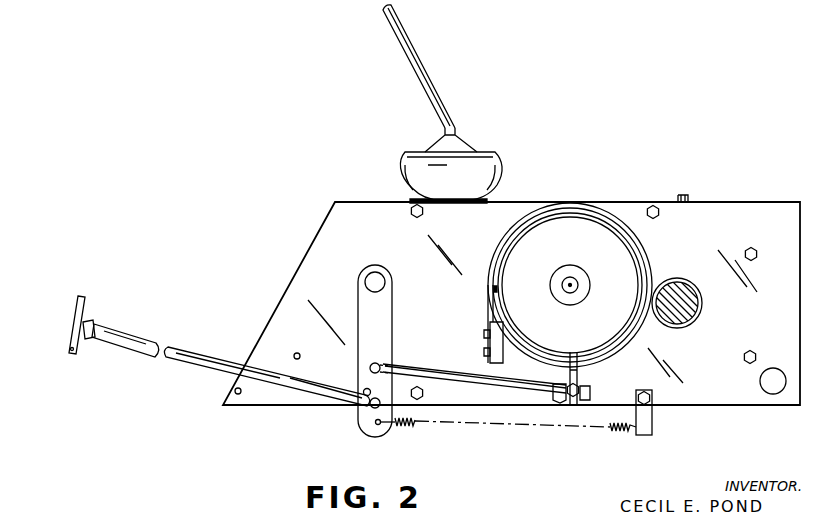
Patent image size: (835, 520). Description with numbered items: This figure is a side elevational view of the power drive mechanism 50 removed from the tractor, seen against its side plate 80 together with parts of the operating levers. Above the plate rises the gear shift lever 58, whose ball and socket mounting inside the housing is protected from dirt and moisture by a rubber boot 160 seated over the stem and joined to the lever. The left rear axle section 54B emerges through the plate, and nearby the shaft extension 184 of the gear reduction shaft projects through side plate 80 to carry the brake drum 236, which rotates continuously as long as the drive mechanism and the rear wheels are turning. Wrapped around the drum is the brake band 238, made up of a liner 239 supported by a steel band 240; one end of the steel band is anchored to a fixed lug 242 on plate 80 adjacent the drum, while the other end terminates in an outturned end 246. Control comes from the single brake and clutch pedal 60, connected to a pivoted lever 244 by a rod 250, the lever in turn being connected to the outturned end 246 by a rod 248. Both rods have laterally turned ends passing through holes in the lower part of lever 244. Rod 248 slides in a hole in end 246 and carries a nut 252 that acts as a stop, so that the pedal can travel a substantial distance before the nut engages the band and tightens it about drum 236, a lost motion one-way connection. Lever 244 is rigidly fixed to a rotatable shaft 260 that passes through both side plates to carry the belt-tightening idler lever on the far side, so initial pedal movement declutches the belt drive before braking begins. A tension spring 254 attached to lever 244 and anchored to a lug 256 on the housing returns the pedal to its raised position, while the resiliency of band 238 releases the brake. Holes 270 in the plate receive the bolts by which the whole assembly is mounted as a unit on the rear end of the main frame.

The power drive mechanism 50 is at (445, 313).
The left rear axle section 54B is at (690, 306).
The gear shift lever 58 is at (408, 57).
The brake and clutch pedal 60 is at (82, 314).
The side plate 80 is at (712, 404).
The rubber boot 160 is at (490, 166).
The shaft extension 184 is at (562, 286).
The brake drum 236 is at (620, 258).
The brake band 238 is at (506, 236).
The liner 239 is at (495, 250).
The steel band 240 is at (487, 316).
The fixed lug 242 is at (490, 358).
The pivoted lever 244 is at (384, 358).
The outturned end 246 is at (578, 375).
The rod 248 is at (486, 383).
The rod 250 is at (192, 353).
The nut 252 is at (578, 400).
The tension spring 254 is at (478, 428).
The lug 256 is at (652, 414).
The rotatable shaft 260 is at (375, 275).
The holes 270 is at (297, 353).